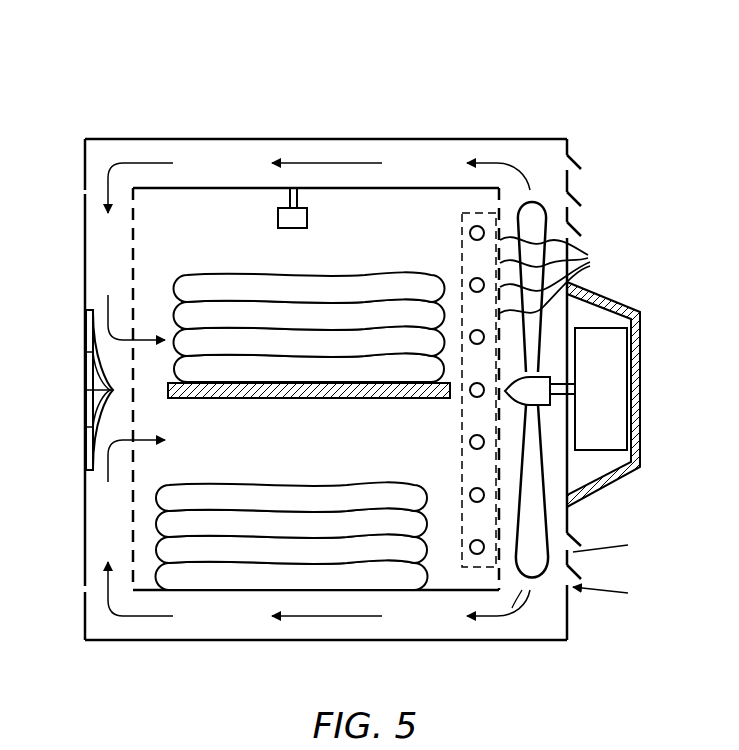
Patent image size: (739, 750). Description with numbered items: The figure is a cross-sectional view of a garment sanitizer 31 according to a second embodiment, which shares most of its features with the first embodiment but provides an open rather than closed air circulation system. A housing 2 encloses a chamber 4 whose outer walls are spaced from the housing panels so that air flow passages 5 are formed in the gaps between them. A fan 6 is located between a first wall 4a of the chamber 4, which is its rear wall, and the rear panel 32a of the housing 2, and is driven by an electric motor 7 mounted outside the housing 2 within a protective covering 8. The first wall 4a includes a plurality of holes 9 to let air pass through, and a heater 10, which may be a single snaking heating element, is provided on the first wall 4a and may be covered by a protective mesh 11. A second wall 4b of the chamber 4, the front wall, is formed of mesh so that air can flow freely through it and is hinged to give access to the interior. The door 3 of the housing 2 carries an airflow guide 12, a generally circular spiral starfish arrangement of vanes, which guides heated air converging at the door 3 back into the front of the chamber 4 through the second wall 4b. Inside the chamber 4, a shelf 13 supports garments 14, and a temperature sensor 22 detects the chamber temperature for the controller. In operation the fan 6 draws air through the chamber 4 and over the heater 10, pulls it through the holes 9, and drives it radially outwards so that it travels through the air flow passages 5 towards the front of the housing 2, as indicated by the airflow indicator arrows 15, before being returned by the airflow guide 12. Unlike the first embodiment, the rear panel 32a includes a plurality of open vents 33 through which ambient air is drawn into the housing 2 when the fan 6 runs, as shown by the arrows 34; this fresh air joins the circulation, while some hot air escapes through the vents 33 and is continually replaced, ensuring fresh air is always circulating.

The housing 2 is at (108, 138).
The door 3 is at (85, 246).
The chamber 4 is at (133, 552).
The first wall 4a is at (497, 423).
The second wall 4b is at (133, 502).
The air flow passages 5 is at (228, 155).
The fan 6 is at (538, 590).
The electric motor 7 is at (627, 340).
The protective covering 8 is at (641, 390).
The holes 9 is at (549, 275).
The heater 10 is at (470, 284).
The protective mesh 11 is at (462, 213).
The airflow guide 12 is at (85, 397).
The shelf 13 is at (268, 400).
The garments 14 is at (237, 290).
The airflow indicator arrows 15 is at (330, 163).
The temperature sensor 22 is at (307, 218).
The garment sanitizer 31 is at (540, 68).
The rear panel 32a is at (583, 565).
The open vents 33 is at (580, 178).
The arrows 34 is at (620, 545).